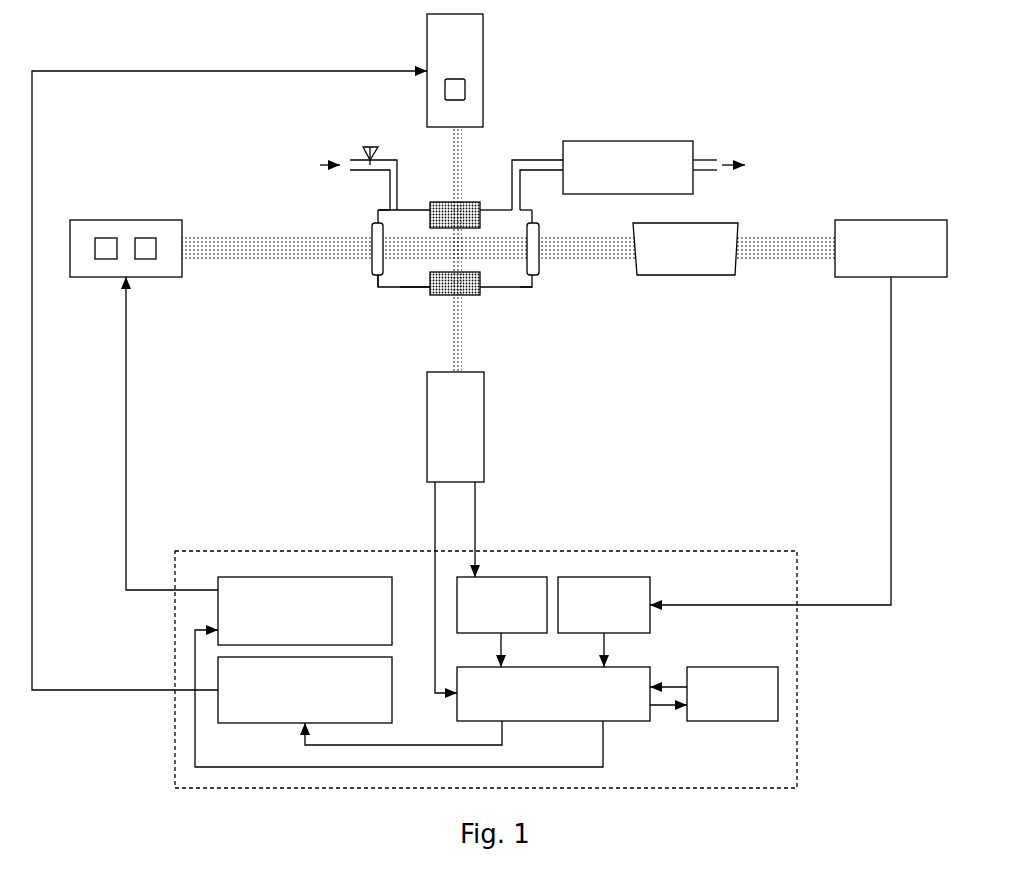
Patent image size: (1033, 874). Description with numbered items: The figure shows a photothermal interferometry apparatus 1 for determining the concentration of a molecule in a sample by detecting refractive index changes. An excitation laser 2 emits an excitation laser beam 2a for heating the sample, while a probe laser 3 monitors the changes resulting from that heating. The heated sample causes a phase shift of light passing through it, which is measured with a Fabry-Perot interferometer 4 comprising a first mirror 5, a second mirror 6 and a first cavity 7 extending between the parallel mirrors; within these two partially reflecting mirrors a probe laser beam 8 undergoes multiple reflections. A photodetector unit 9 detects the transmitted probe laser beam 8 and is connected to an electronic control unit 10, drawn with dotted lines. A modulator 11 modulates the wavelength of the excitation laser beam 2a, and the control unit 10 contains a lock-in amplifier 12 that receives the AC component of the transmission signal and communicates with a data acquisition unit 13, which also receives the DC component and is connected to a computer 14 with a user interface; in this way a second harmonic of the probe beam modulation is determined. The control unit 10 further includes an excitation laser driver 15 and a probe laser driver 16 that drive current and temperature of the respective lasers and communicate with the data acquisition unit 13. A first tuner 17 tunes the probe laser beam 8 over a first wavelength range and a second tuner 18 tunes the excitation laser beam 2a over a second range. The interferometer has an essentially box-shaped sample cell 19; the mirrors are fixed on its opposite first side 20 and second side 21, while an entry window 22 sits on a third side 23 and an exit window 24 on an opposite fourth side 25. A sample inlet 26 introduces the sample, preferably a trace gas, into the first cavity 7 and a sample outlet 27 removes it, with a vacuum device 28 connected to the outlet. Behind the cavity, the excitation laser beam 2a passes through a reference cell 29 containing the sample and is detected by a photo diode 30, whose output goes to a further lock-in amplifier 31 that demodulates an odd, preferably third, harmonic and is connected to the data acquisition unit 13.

The photothermal interferometry apparatus 1 is at (461, 386).
The excitation laser 2 is at (126, 220).
The excitation laser beam 2a is at (233, 245).
The probe laser 3 is at (485, 69).
The Fabry-Perot interferometer 4 is at (473, 259).
The first mirror 5 is at (466, 205).
The second mirror 6 is at (468, 296).
The first cavity 7 is at (437, 259).
The probe laser beam 8 is at (462, 150).
The photodetector unit 9 is at (485, 428).
The electronic control unit 10 is at (774, 551).
The modulator 11 is at (105, 260).
The lock-in amplifier 12 is at (500, 577).
The data acquisition unit 13 is at (628, 722).
The computer 14 is at (730, 722).
The excitation laser driver 15 is at (305, 577).
The probe laser driver 16 is at (218, 710).
The first tuner 17 is at (445, 90).
The second tuner 18 is at (147, 260).
The sample cell 19 is at (378, 282).
The first side 20 is at (420, 202).
The second side 21 is at (420, 296).
The entry window 22 is at (372, 232).
The third side 23 is at (378, 212).
The exit window 24 is at (540, 233).
The fourth side 25 is at (534, 282).
The sample inlet 26 is at (352, 160).
The sample outlet 27 is at (538, 158).
The vacuum device 28 is at (620, 141).
The reference cell 29 is at (688, 276).
The photo diode 30 is at (892, 220).
The further lock-in amplifier 31 is at (605, 577).